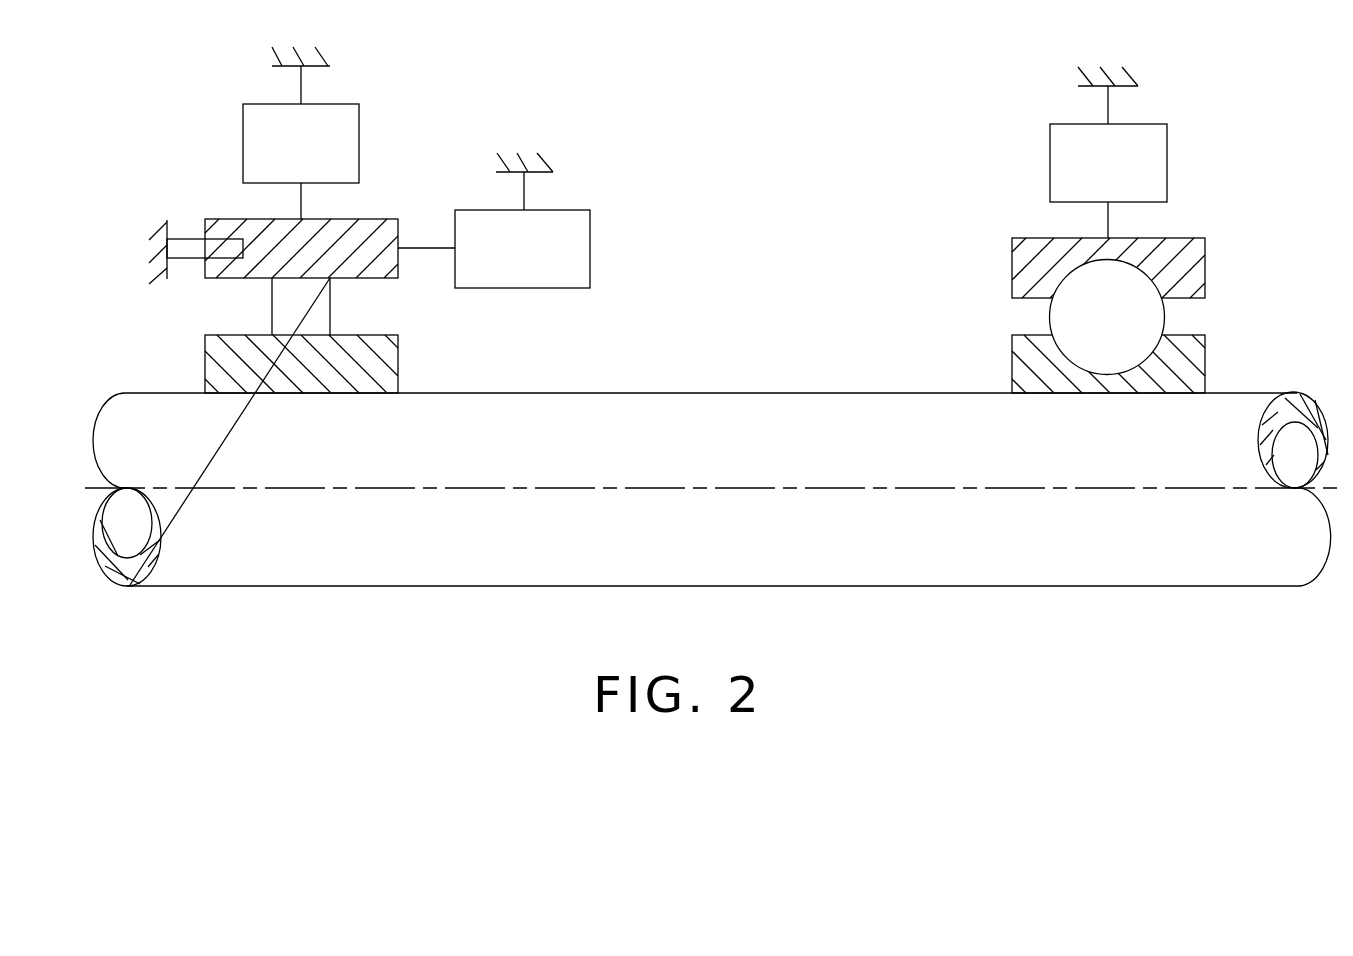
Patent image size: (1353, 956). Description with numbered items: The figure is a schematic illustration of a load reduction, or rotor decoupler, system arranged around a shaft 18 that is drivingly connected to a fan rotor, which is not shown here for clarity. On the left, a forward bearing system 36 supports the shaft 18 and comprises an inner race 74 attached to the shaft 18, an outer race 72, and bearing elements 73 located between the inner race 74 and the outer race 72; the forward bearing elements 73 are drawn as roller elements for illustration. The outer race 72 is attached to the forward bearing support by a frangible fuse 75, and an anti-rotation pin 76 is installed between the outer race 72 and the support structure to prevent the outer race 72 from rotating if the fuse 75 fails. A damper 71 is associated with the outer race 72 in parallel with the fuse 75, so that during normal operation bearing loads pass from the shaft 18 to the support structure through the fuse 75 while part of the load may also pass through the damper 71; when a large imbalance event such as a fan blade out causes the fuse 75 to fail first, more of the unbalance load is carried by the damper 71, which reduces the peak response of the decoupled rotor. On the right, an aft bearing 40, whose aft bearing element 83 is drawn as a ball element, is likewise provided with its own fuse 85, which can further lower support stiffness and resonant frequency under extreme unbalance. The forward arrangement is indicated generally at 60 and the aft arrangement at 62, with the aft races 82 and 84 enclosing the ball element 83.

The shaft 18 is at (530, 553).
The forward bearing system 36 is at (383, 308).
The aft bearing 40 is at (1005, 315).
The first support arrangement 60 is at (190, 140).
The second support arrangement 62 is at (1203, 140).
The damper 71 is at (592, 250).
The outer race 72 is at (378, 219).
The bearing elements 73 is at (272, 307).
The inner race 74 is at (205, 362).
The frangible fuse 75 is at (262, 103).
The anti-rotation pin 76 is at (187, 239).
The upper block 82 is at (1040, 238).
The aft bearing element 83 is at (1166, 317).
The lower shoe block 84 is at (1012, 364).
The fuse 85 is at (1050, 157).